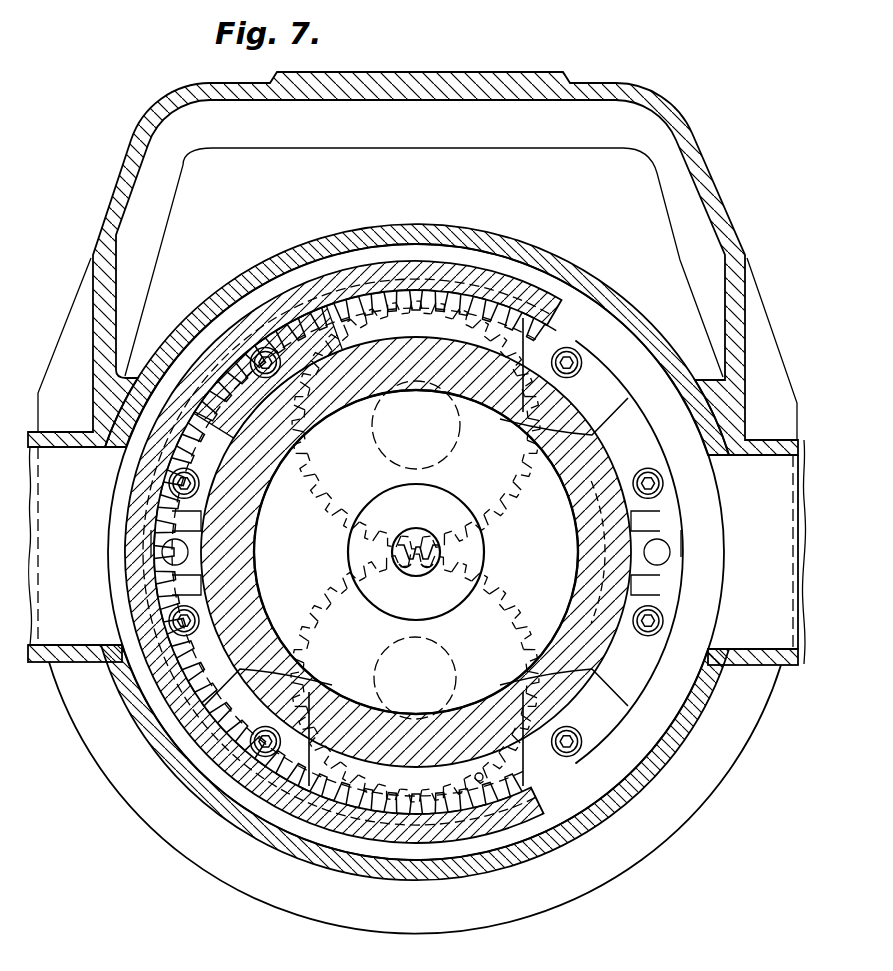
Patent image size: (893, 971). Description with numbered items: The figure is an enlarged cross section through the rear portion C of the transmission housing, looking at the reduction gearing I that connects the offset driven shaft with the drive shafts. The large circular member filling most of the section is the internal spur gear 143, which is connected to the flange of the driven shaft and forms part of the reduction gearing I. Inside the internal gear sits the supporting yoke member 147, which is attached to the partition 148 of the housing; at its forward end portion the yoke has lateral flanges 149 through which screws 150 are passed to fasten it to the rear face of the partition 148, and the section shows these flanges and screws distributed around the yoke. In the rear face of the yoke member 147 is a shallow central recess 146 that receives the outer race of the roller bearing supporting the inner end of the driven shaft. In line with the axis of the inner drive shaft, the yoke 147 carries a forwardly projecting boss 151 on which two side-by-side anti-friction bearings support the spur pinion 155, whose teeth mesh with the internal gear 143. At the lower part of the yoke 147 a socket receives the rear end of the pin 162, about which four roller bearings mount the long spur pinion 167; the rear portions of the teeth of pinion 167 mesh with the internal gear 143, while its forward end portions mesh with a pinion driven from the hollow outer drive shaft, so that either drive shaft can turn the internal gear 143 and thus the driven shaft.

The rear portion of housing C is at (141, 128).
The reduction gearing I is at (324, 219).
The internal spur gear 143 is at (455, 270).
The partition 148 is at (545, 325).
The pinion 155 is at (458, 326).
The supporting yoke member 147 is at (612, 540).
The screws 150 is at (592, 340).
The lateral flanges 149 is at (594, 372).
The shallow central recess 146 is at (598, 538).
The forwardly projecting boss 151 is at (450, 437).
The pin 162 is at (382, 667).
The long spur pinion 167 is at (473, 775).